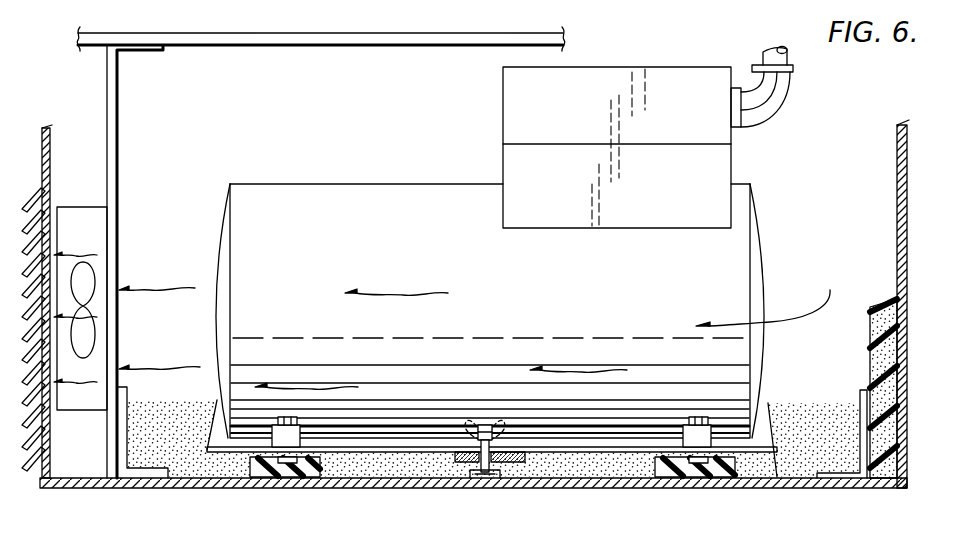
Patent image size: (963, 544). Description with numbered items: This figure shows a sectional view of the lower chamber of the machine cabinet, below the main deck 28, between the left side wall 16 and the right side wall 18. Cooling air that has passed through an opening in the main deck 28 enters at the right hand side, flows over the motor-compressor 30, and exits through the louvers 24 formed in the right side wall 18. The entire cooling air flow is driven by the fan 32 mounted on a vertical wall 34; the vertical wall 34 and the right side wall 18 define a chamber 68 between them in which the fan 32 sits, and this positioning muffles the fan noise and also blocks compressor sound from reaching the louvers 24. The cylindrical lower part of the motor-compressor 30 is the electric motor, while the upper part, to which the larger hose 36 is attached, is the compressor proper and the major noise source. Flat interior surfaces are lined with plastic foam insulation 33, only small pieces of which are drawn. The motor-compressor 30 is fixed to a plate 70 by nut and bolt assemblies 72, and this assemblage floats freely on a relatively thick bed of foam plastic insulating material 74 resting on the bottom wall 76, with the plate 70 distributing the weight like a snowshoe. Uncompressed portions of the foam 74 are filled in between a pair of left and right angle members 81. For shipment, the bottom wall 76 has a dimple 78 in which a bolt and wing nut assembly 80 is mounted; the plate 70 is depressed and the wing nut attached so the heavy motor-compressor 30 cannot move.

The left side wall 16 is at (897, 197).
The right side wall 18 is at (43, 151).
The louvers 24 is at (30, 470).
The main deck 28 is at (284, 33).
The motor-compressor 30 is at (527, 288).
The fan 32 is at (86, 207).
The plastic foam insulation 33 is at (870, 351).
The vertical wall 34 is at (118, 164).
The larger hose 36 is at (764, 55).
The chamber 68 is at (90, 135).
The plate 70 is at (232, 455).
The nut and bolt assemblies 72 is at (702, 418).
The bed of foam plastic insulating material 74 is at (375, 462).
The bottom wall 76 is at (583, 485).
The dimple 78 is at (506, 462).
The bolt and wing nut assembly 80 is at (483, 464).
The angle members 81 is at (137, 465).